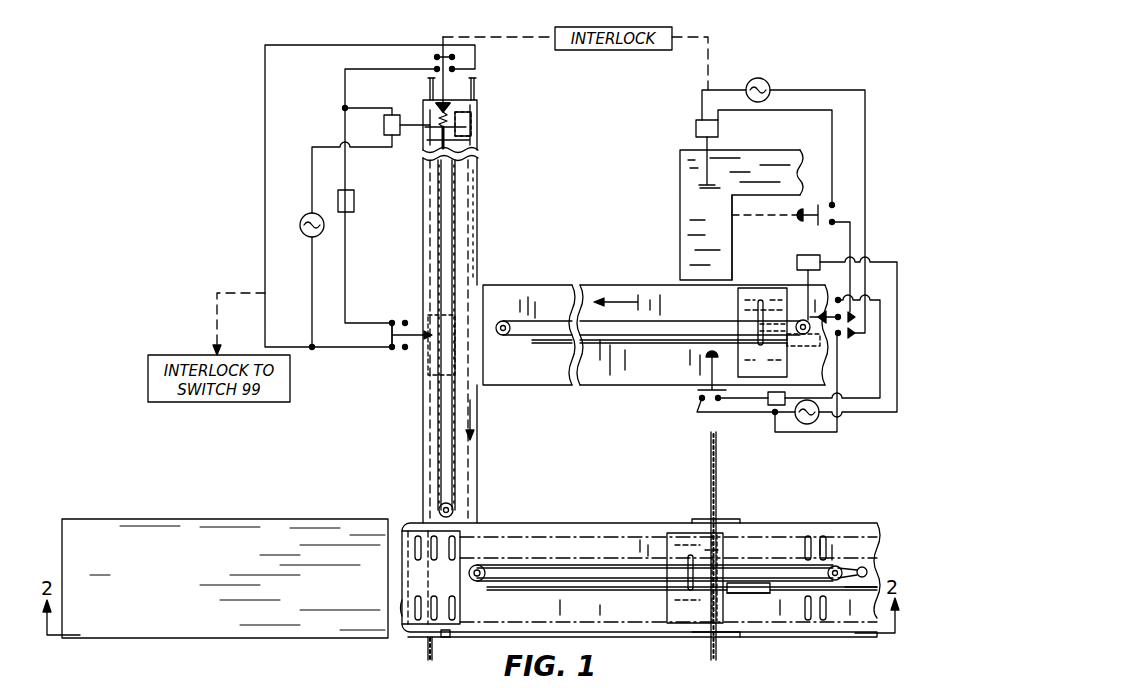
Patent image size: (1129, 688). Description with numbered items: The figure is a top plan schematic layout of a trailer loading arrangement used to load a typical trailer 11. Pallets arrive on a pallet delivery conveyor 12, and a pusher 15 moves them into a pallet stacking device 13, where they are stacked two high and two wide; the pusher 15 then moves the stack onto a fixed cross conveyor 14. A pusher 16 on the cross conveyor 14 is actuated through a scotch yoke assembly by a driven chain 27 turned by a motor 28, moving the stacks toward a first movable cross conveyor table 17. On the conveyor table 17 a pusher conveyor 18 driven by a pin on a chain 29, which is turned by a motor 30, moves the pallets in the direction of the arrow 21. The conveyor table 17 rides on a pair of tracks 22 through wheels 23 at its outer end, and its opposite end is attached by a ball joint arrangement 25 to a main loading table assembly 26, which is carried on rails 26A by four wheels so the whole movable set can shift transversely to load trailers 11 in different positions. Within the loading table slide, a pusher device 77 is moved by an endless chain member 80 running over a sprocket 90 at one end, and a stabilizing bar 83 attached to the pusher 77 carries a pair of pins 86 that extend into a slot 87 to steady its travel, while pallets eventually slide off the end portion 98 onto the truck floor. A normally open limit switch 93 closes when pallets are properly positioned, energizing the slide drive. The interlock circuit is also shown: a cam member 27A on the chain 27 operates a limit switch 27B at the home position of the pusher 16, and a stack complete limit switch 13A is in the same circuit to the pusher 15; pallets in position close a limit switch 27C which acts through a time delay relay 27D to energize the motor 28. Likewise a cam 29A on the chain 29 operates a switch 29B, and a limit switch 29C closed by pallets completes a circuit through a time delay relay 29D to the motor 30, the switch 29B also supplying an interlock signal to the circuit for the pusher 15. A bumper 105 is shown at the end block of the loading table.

The trailer 11 is at (253, 524).
The pallet delivery conveyor 12 is at (767, 153).
The pallet stacking device 13 is at (720, 240).
The stack complete limit switch 13A is at (816, 205).
The fixed cross conveyor 14 is at (634, 288).
The pusher 15 is at (696, 129).
The pusher 16 is at (730, 301).
The movable cross conveyor table 17 is at (421, 395).
The pusher conveyor 18 is at (427, 135).
The arrow 21 is at (472, 411).
The tracks 22 is at (471, 87).
The wheels 23 is at (472, 140).
The ball joint arrangement 25 is at (452, 516).
The main loading table assembly 26 is at (618, 518).
The rails 26A is at (718, 450).
The driven chain 27 is at (532, 338).
The cam member 27A is at (821, 313).
The limit switch 27B is at (840, 339).
The limit switch 27C is at (702, 401).
The time delay relay 27D is at (772, 410).
The motor 28 is at (822, 248).
The chain 29 is at (437, 290).
The cam 29A is at (452, 112).
The switch 29B is at (459, 61).
The limit switch 29C is at (402, 351).
The time delay relay 29D is at (352, 190).
The motor 30 is at (384, 125).
The pusher device 77 is at (688, 540).
The endless chain member 80 is at (507, 562).
The stabilizing bar 83 is at (770, 598).
The pins 86 is at (730, 593).
The slot 87 is at (855, 587).
The pulley 90 is at (773, 571).
The limit switch 93 is at (447, 637).
The end portion 98 is at (411, 538).
The bumper 105 is at (400, 610).